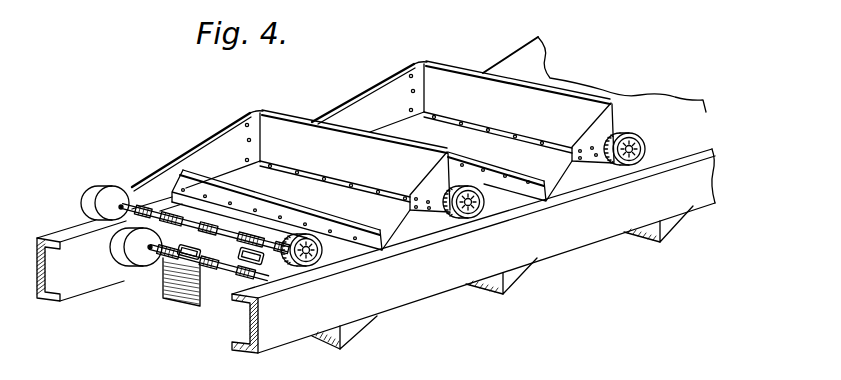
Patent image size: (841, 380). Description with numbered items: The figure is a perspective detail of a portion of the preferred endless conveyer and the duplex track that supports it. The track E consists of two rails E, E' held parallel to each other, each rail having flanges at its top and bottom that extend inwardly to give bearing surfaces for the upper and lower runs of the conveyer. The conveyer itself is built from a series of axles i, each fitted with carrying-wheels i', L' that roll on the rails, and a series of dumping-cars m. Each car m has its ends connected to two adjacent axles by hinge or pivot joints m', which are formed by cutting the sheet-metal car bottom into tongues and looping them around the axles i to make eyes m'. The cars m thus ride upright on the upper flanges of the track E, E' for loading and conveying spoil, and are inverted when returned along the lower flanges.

The duplex track E is at (473, 251).
The track rail E' is at (118, 247).
The axle i is at (153, 243).
The carrying-wheel i' is at (122, 180).
The dumping-car m is at (279, 126).
The hinge or pivot joint (eye) m' is at (205, 249).
The carrying-wheel L' is at (439, 151).